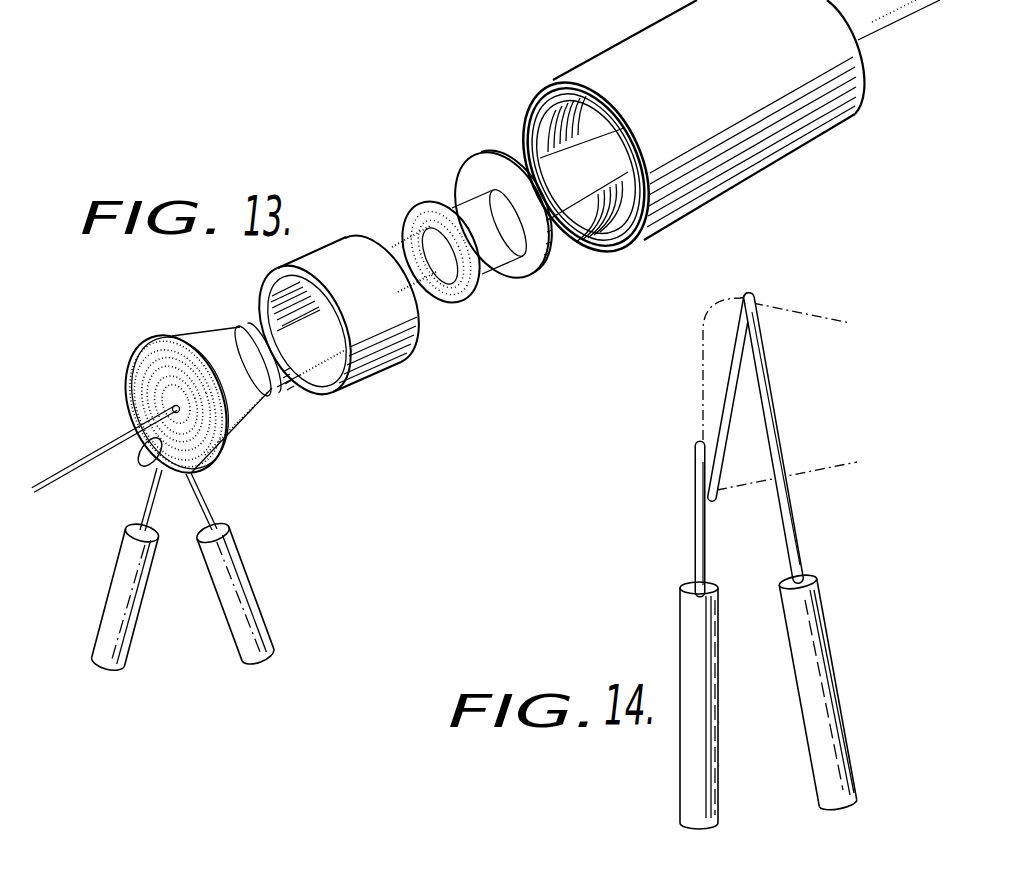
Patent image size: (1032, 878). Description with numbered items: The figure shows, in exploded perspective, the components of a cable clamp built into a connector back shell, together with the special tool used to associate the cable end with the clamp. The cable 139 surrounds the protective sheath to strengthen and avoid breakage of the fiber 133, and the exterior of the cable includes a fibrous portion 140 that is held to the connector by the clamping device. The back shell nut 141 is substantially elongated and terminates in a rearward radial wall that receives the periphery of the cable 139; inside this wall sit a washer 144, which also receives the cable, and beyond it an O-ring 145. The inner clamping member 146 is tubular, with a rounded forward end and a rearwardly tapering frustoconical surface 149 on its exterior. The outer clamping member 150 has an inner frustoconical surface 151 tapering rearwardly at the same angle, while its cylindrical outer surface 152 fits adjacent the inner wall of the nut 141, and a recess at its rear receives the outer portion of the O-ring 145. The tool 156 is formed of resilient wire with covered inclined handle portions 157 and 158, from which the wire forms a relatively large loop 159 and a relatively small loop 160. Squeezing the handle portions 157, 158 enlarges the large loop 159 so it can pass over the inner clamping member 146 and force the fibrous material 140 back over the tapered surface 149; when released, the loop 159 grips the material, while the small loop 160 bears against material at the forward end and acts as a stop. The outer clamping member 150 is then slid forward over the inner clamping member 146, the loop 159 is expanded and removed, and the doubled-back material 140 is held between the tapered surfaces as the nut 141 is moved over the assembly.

In FIG. 13, the fiber 133 is at (100, 452).
In FIG. 13, the cable 139 is at (287, 387).
In FIG. 13, the fibrous portion 140 is at (240, 440).
In FIG. 14, the fibrous portion 140 is at (793, 312).
In FIG. 13, the back shell nut 141 is at (760, 163).
In FIG. 13, the washer 144 is at (530, 273).
In FIG. 13, the O-ring 145 is at (457, 307).
In FIG. 13, the inner clamping member 146 is at (273, 403).
In FIG. 13, the frustoconical surface 149 is at (244, 333).
In FIG. 13, the outer clamping member 150 is at (388, 360).
In FIG. 13, the inner frustoconical surface 151 is at (270, 284).
In FIG. 13, the outer surface 152 is at (362, 378).
In FIG. 13, the tool 156 is at (248, 545).
In FIG. 14, the tool 156 is at (674, 615).
In FIG. 13, the handle portion 157 is at (127, 648).
In FIG. 14, the handle portion 157 is at (688, 795).
In FIG. 13, the handle portion 158 is at (268, 631).
In FIG. 14, the handle portion 158 is at (847, 748).
In FIG. 13, the large loop 159 is at (190, 338).
In FIG. 14, the large loop 159 is at (730, 398).
In FIG. 13, the small loop 160 is at (147, 458).
In FIG. 14, the small loop 160 is at (695, 475).